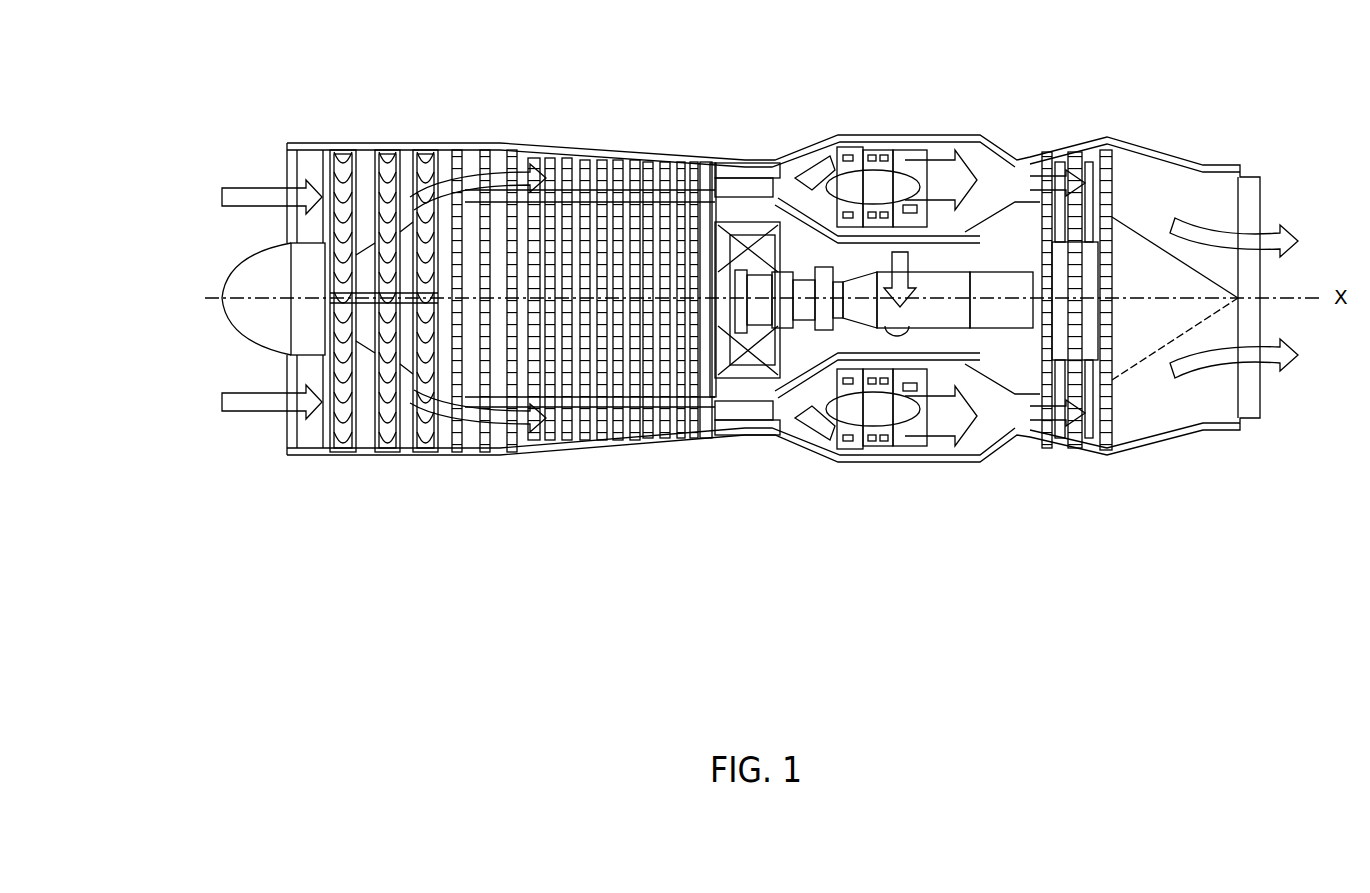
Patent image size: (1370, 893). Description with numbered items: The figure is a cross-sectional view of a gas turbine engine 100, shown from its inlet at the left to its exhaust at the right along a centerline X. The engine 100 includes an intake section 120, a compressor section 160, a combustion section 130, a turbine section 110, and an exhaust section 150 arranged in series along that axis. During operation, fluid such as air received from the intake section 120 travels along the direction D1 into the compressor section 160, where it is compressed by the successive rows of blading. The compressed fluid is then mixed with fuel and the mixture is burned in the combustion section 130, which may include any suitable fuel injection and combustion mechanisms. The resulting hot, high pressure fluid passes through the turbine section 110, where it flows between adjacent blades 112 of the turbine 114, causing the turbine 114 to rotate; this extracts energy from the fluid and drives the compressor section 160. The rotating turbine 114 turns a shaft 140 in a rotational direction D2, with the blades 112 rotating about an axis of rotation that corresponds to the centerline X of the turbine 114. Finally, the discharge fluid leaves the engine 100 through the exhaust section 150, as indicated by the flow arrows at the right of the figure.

The gas turbine engine 100 is at (812, 524).
The turbine section 110 is at (1150, 232).
The blades 112 is at (1107, 275).
The turbine 114 is at (1126, 311).
The intake section 120 is at (282, 432).
The combustion section 130 is at (985, 172).
The shaft 140 is at (948, 302).
The exhaust section 150 is at (1246, 207).
The compressor section 160 is at (562, 157).
The direction D1 is at (235, 198).
The rotational direction D2 is at (897, 262).